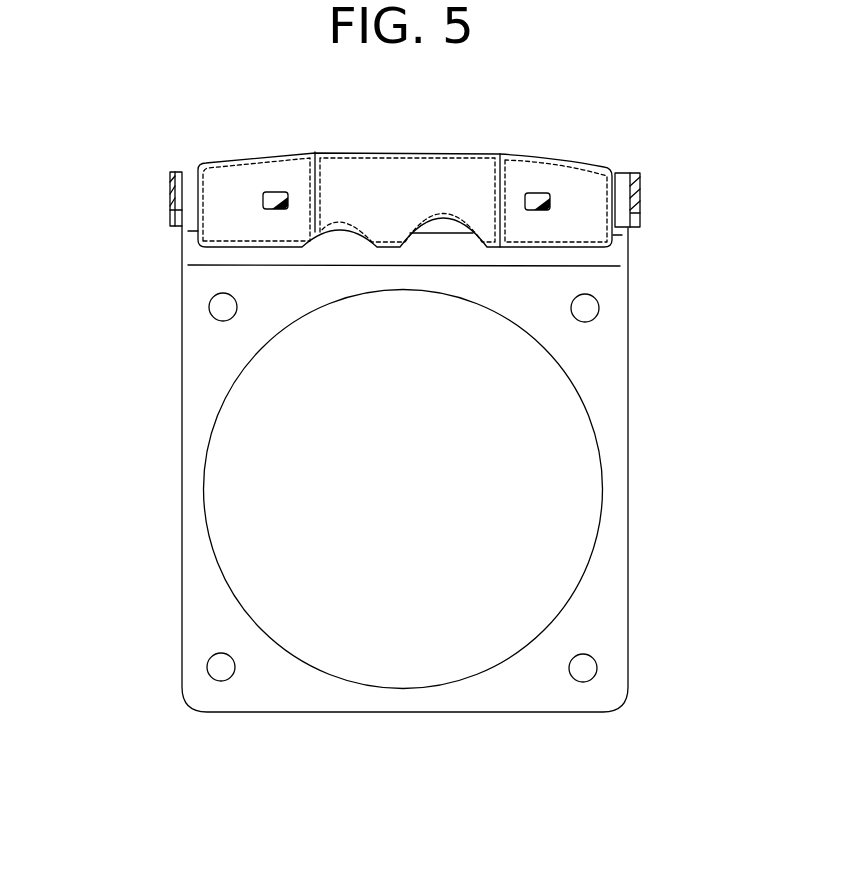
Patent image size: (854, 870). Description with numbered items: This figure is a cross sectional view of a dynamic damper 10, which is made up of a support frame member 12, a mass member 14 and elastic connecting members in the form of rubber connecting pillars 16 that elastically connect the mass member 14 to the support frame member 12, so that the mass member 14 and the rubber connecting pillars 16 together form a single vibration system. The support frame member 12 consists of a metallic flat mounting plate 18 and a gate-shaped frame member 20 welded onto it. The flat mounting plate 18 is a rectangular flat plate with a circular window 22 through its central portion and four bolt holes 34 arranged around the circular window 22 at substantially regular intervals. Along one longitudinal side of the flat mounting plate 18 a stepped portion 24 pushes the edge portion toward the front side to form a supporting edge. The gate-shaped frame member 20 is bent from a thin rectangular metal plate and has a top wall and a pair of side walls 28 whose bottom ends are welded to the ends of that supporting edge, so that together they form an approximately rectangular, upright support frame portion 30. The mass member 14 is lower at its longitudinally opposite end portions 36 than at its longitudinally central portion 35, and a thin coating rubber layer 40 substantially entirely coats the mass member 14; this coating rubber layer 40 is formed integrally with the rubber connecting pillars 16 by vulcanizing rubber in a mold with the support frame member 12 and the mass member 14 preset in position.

The dynamic damper 10 is at (636, 148).
The support frame member 12 is at (80, 227).
The mass member 14 is at (440, 143).
The rubber connecting pillars 16 is at (276, 192).
The flat mounting plate 18 is at (170, 288).
The gate-shaped frame member 20 is at (156, 197).
The circular window 22 is at (570, 397).
The stepped portion 24 is at (578, 259).
The side walls 28 is at (174, 183).
The support frame portion 30 is at (656, 205).
The bolt holes 34 is at (234, 311).
The longitudinally central portion 35 is at (383, 197).
The longitudinally opposite end portions 36 is at (225, 185).
The coating rubber layer 40 is at (337, 152).